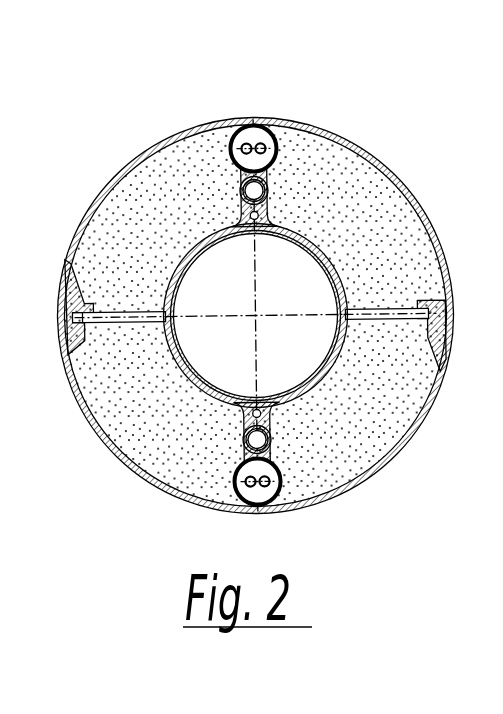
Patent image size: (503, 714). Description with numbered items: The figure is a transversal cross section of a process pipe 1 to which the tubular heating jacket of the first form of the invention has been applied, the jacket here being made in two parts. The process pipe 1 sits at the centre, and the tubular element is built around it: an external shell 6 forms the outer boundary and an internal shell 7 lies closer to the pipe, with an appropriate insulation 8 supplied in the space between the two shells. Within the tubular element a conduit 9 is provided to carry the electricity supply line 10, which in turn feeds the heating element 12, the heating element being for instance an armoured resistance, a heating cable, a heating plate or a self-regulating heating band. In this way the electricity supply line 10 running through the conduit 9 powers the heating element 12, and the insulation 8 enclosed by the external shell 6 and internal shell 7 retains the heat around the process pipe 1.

The process pipe 1 is at (292, 292).
The external shell 6 is at (104, 193).
The internal shell 7 is at (241, 183).
The insulation 8 is at (349, 160).
The conduit 9 is at (259, 123).
The electricity supply line 10 is at (246, 140).
The heating element 12 is at (272, 128).